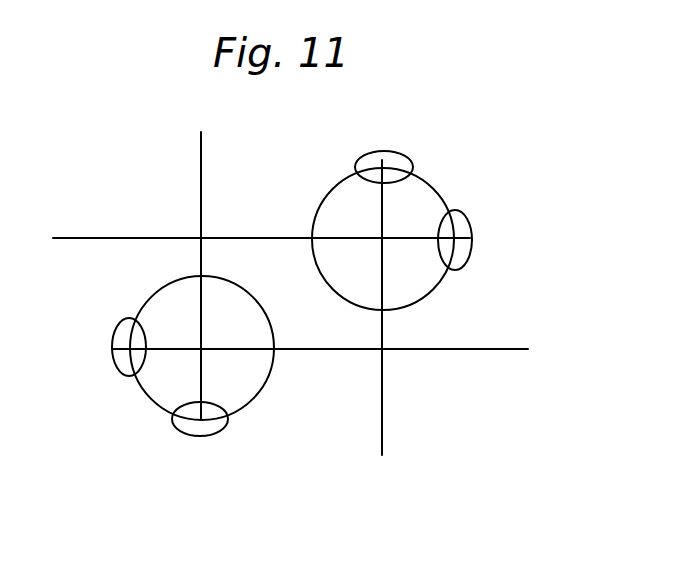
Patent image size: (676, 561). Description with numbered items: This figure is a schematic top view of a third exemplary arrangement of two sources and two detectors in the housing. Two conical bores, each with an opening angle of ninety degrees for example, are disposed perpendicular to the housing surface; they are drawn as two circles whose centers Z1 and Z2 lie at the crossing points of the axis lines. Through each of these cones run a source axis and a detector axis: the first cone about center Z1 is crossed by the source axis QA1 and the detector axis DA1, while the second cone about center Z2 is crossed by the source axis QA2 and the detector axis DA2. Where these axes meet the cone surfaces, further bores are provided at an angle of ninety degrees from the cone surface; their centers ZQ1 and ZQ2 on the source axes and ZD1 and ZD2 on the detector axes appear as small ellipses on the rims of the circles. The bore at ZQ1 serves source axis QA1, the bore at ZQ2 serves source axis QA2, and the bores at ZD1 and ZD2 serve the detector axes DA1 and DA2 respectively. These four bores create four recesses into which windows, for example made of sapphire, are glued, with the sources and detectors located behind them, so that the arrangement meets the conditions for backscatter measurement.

The source axis QA1 is at (83, 238).
The source axis QA2 is at (503, 349).
The detector axis DA1 is at (382, 445).
The detector axis DA2 is at (201, 160).
The center of conical bore Z1 is at (383, 240).
The center of conical bore Z2 is at (202, 348).
The bore center ZD1 is at (383, 163).
The bore center ZD2 is at (200, 432).
The bore center ZQ1 is at (470, 240).
The bore center ZQ2 is at (112, 347).